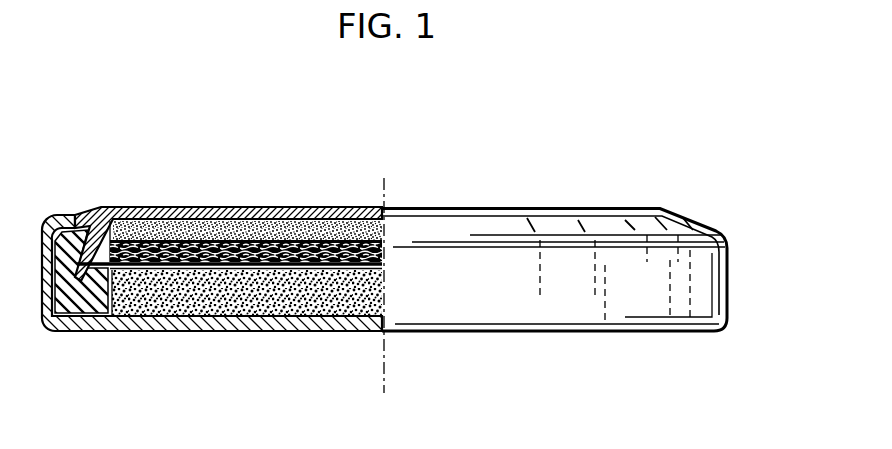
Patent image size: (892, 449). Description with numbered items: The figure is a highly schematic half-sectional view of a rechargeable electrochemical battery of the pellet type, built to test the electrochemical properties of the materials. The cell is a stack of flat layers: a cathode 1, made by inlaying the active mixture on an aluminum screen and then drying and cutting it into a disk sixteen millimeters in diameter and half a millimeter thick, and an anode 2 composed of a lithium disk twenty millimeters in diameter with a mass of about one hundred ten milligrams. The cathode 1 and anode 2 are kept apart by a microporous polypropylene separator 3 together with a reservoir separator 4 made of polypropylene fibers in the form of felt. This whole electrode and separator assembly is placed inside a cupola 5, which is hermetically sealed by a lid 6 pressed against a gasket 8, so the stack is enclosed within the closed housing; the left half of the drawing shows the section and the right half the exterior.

The cathode 1 is at (197, 314).
The anode 2 is at (215, 235).
The microporous polypropylene separator 3 is at (255, 266).
The reservoir separator 4 is at (170, 254).
The cupola 5 is at (142, 319).
The lid 6 is at (265, 212).
The gasket 8 is at (80, 298).